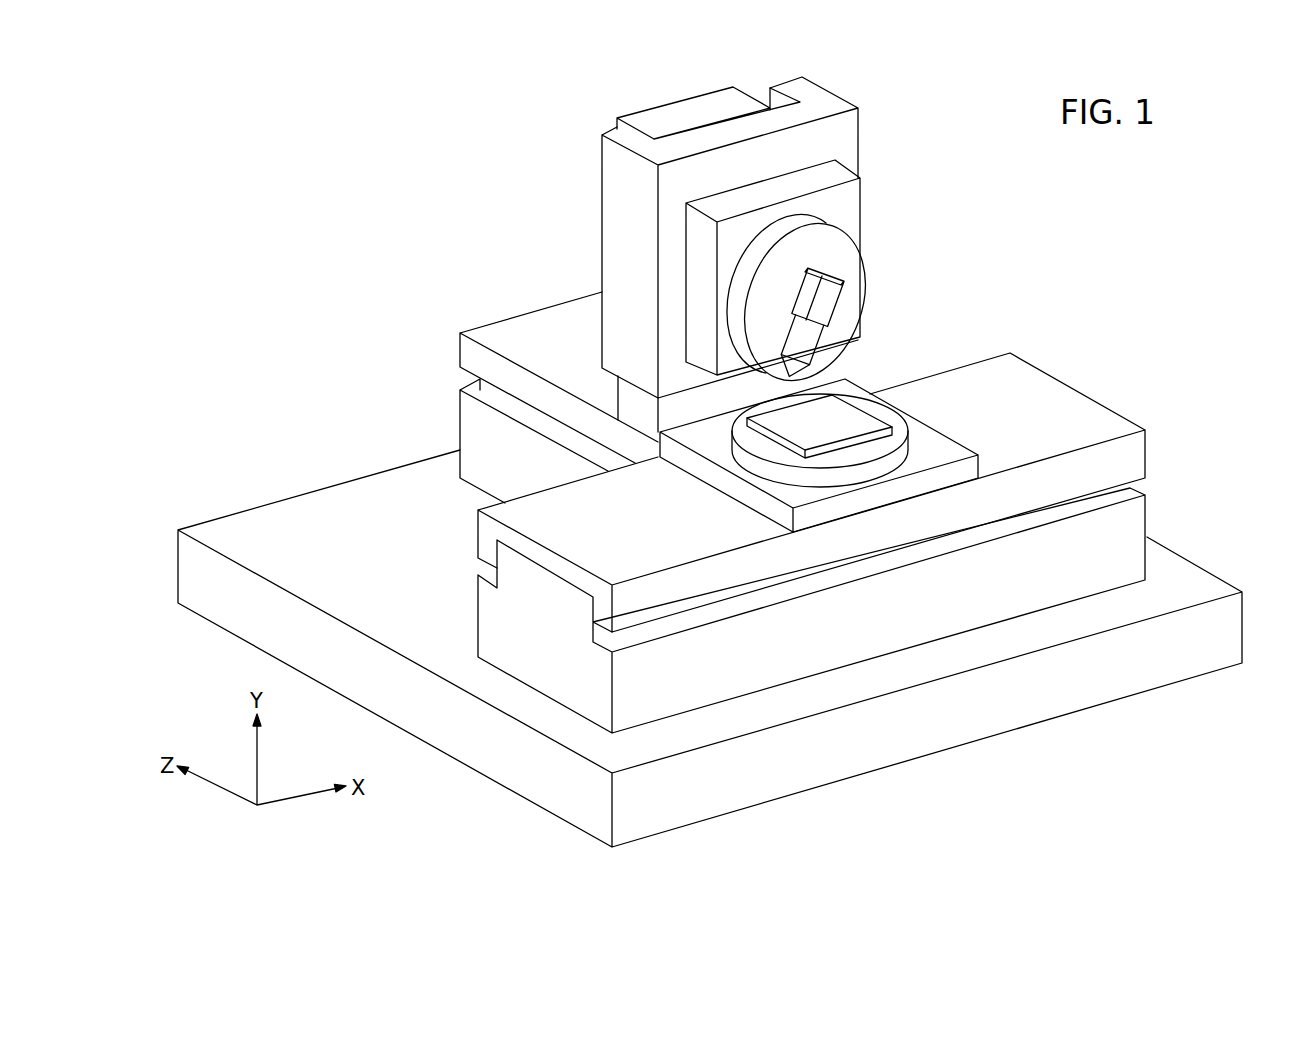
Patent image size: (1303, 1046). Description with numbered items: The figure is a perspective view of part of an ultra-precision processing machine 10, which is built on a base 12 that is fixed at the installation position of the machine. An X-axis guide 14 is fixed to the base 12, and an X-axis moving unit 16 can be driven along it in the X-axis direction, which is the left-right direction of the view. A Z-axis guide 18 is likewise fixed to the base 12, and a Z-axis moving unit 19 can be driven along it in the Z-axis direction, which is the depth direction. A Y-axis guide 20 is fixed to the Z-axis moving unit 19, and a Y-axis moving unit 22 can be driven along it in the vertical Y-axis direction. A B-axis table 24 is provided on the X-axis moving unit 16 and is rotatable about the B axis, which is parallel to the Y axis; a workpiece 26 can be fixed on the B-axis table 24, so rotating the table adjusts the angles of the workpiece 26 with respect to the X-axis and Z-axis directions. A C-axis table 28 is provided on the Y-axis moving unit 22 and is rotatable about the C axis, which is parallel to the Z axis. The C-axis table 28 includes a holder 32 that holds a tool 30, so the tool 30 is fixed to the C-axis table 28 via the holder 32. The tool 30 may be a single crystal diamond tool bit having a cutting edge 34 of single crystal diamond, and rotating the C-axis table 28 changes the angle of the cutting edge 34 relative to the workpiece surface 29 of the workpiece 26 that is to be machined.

The ultra-precision processing machine 10 is at (1151, 184).
The base 12 is at (343, 498).
The X-axis guide 14 is at (485, 599).
The X-axis moving unit 16 is at (484, 533).
The Z-axis guide 18 is at (467, 428).
The Z-axis moving unit 19 is at (472, 353).
The Y-axis guide 20 is at (655, 122).
The Y-axis moving unit 22 is at (843, 138).
The B-axis table 24 is at (760, 463).
The workpiece 26 is at (870, 416).
The C-axis table 28 is at (835, 243).
The workpiece surface 29 is at (800, 423).
The tool 30 is at (790, 329).
The holder 32 is at (825, 297).
The cutting edge 34 is at (800, 380).